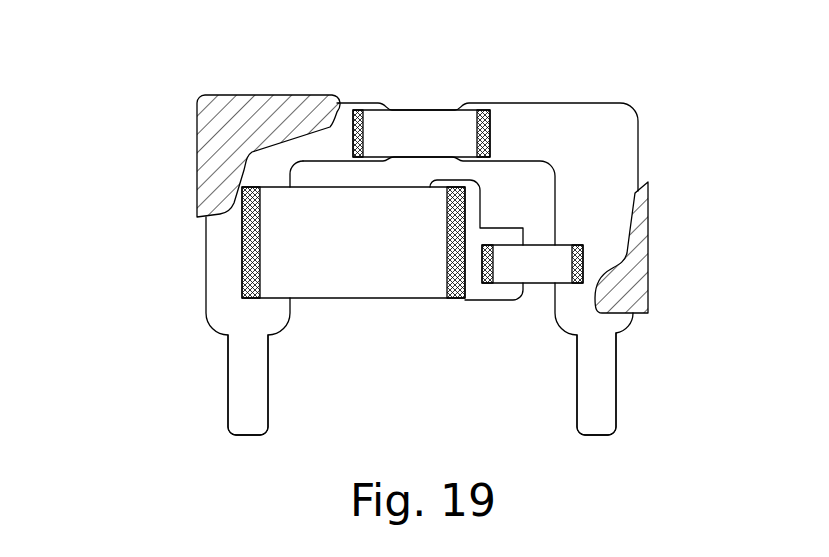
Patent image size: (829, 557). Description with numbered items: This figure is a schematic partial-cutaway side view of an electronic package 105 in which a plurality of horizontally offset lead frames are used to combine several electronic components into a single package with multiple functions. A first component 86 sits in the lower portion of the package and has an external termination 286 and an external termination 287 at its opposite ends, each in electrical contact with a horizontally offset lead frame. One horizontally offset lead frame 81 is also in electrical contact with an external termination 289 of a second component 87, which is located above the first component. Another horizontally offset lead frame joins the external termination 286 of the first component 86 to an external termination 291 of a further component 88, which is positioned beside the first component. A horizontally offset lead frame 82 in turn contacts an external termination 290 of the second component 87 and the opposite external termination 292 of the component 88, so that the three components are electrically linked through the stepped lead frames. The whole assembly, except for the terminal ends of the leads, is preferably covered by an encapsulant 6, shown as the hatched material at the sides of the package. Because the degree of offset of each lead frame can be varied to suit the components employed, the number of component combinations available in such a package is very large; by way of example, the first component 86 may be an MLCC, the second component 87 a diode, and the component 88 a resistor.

The electronic package 105 is at (178, 106).
The encapsulant 6 is at (213, 150).
The horizontally offset lead frame 82 is at (600, 177).
The horizontally offset lead frame 81 is at (255, 385).
The first component 86 is at (308, 278).
The second component 87 is at (442, 128).
The component 88 is at (535, 265).
The external termination 286 is at (450, 292).
The external termination 287 is at (247, 248).
The external termination 289 is at (355, 110).
The external termination 290 is at (487, 110).
The external termination 291 is at (488, 285).
The component terminal 292 is at (577, 285).